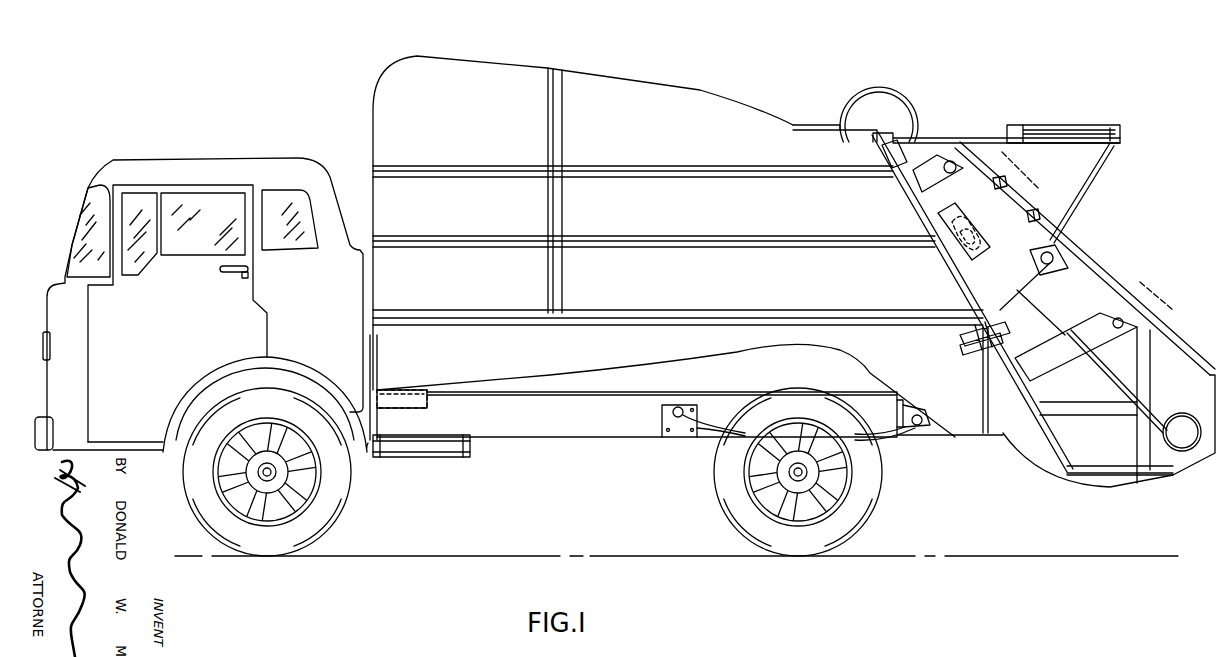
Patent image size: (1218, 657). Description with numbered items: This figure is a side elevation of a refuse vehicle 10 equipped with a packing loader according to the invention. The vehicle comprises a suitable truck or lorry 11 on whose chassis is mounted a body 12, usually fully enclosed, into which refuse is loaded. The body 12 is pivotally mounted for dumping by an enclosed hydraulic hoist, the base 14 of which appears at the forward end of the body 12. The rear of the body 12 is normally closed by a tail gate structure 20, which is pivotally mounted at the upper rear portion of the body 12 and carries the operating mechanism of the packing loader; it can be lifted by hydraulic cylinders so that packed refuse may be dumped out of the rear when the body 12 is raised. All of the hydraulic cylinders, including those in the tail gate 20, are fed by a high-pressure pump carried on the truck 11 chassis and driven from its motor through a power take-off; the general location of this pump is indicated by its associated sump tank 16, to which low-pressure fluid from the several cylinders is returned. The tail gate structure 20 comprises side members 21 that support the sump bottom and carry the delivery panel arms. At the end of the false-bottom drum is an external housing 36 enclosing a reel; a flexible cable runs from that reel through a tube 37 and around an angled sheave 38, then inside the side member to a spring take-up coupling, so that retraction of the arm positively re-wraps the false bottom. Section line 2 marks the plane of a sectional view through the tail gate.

The section line 2- 2 is at (977, 128).
The refuse vehicle 10 is at (368, 133).
The truck 11 is at (278, 157).
The body 12 is at (523, 80).
The base of hydraulic hoist 14 is at (420, 410).
The sump tank 16 is at (458, 445).
The tail gate structure 20 is at (1079, 245).
The side member 21 is at (1073, 316).
The external housing 36 is at (1183, 413).
The tube 37 is at (1113, 384).
The angled sheave 38 is at (940, 225).